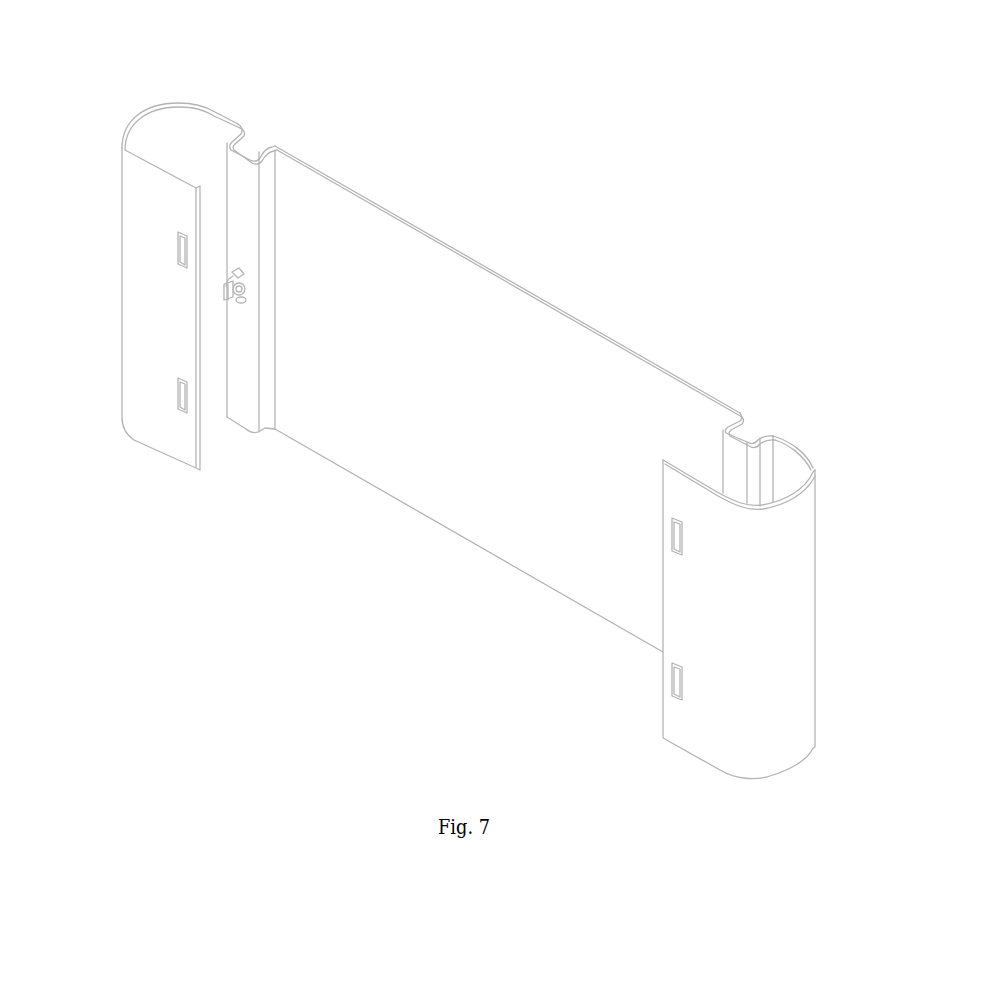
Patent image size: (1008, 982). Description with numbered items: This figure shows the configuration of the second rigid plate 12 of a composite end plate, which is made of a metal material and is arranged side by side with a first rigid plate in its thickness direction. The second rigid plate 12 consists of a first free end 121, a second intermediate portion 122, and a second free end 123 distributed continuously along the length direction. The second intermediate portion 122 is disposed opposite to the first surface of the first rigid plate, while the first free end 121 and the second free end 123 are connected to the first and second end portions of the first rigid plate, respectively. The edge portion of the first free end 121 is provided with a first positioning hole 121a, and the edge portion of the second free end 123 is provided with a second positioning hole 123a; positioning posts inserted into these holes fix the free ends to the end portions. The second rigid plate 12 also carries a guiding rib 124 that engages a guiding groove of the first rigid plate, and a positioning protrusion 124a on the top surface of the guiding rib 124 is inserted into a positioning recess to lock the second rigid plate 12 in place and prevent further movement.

The second rigid plate 12 is at (627, 167).
The first free end 121 is at (137, 312).
The first positioning hole 121a is at (177, 250).
The second intermediate portion 122 is at (442, 498).
The second free end 123 is at (793, 620).
The second positioning hole 123a is at (676, 535).
The guiding rib 124 is at (238, 172).
The positioning protrusion 124a is at (250, 300).